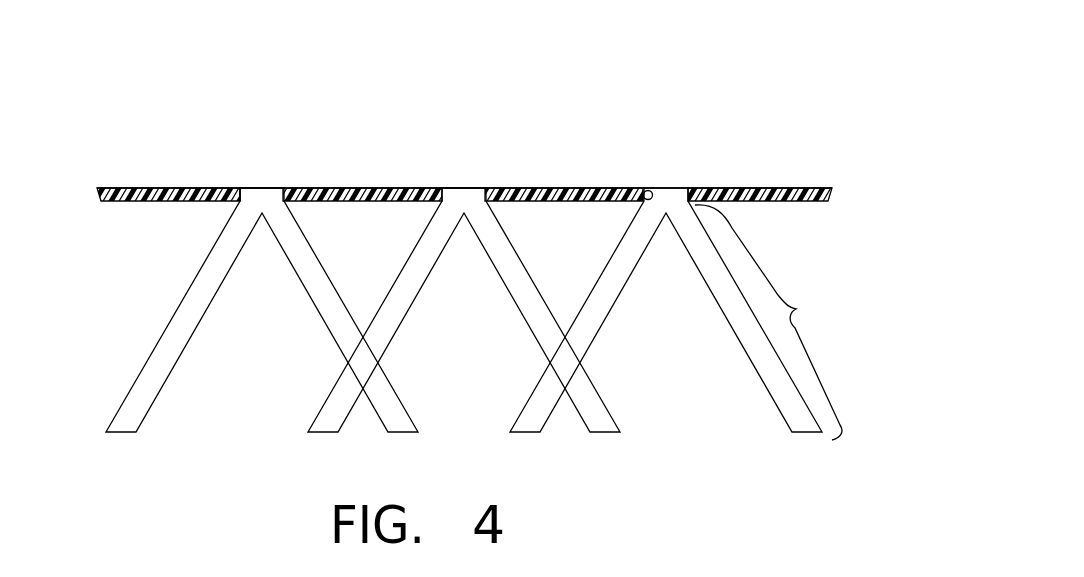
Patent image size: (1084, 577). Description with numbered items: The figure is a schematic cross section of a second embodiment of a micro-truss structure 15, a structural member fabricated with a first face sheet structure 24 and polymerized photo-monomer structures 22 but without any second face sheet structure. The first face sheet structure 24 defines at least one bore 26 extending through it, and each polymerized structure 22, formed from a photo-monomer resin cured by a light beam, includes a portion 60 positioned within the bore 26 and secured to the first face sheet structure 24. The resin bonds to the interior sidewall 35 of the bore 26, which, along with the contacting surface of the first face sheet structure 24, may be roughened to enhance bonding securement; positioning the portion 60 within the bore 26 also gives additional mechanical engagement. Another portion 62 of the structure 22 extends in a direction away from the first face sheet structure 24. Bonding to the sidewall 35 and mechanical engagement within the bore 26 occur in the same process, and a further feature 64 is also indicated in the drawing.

The micro-truss structure 15 is at (155, 88).
The polymerized structure 22 is at (180, 325).
The first face sheet structure 24 is at (135, 193).
The bore 26 is at (471, 187).
The interior sidewall 35 is at (248, 193).
The portion of structure 60 is at (656, 194).
The another portion of structure 62 is at (796, 309).
The joint 64 is at (278, 187).